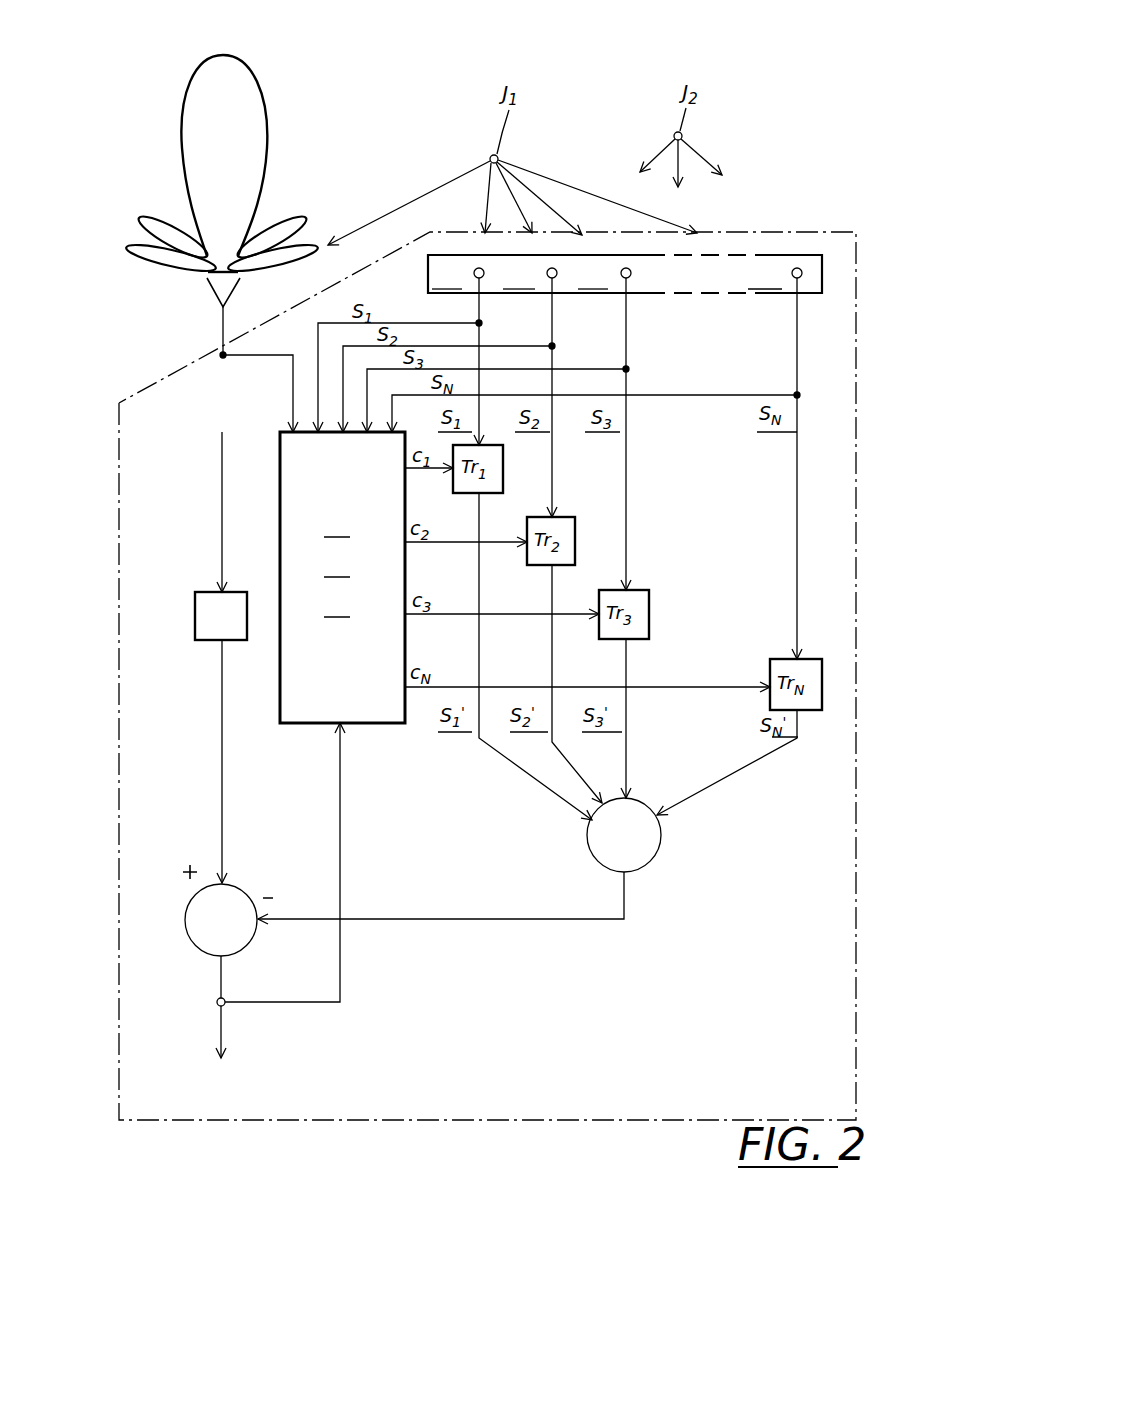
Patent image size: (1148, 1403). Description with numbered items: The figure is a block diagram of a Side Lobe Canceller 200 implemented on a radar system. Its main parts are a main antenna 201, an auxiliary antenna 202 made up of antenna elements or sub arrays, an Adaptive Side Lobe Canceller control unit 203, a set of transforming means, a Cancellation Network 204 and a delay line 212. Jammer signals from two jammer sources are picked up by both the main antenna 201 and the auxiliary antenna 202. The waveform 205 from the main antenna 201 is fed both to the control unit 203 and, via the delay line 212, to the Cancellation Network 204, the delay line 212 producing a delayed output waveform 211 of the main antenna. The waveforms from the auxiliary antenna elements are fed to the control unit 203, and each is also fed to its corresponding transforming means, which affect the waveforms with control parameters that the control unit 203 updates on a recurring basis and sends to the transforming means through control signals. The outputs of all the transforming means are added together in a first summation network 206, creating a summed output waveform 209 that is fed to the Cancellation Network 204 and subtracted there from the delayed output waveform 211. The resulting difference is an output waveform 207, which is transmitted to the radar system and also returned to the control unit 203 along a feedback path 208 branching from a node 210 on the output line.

The Side Lobe Canceller 200 is at (773, 218).
The main antenna 201 is at (212, 290).
The auxiliary antenna 202 is at (823, 270).
The Adaptive Side Lobe Canceller control unit 203 is at (290, 725).
The Cancellation Network 204 is at (208, 947).
The waveform from the main antenna 205 is at (221, 326).
The first summation network 206 is at (647, 867).
The output waveform from the Cancellation Network 207 is at (218, 1023).
The feedback line to ASC 208 is at (340, 807).
The summed output waveform 209 is at (522, 920).
The output node 210 is at (216, 1002).
The delayed output waveform of the main antenna 211 is at (222, 703).
The delay line 212 is at (207, 643).